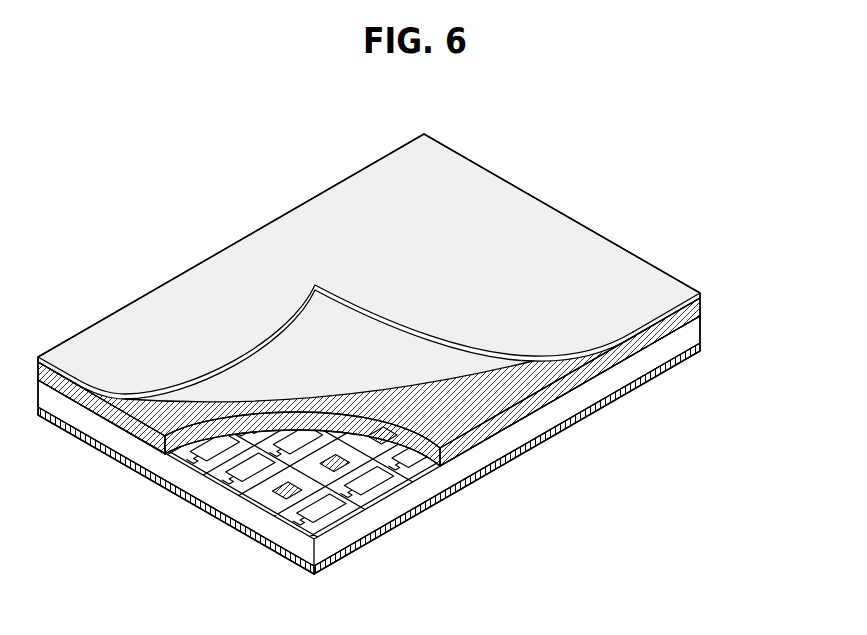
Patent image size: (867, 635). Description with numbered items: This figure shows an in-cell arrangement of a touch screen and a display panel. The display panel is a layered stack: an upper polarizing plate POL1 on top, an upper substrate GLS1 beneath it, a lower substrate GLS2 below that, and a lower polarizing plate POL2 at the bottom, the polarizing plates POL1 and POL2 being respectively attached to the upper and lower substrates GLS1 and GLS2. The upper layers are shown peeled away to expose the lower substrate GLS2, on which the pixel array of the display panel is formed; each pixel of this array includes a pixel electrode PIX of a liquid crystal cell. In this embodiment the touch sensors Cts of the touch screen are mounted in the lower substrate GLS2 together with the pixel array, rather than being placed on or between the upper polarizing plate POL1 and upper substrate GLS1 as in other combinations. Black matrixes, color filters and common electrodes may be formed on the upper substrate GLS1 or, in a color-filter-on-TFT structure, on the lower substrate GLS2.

The upper polarizing plate POL1 is at (700, 294).
The upper substrate GLS1 is at (697, 313).
The lower substrate GLS2 is at (697, 333).
The lower polarizing plate POL2 is at (700, 356).
The touch sensors Cts is at (286, 496).
The pixel electrode PIX is at (315, 525).